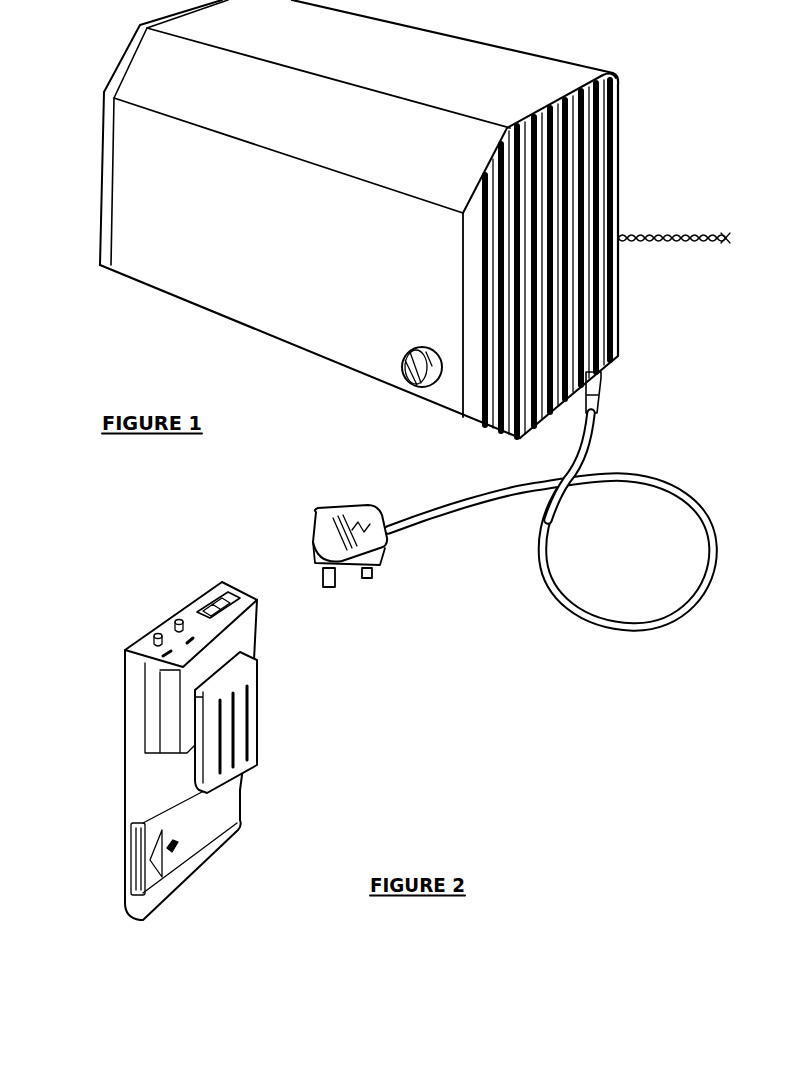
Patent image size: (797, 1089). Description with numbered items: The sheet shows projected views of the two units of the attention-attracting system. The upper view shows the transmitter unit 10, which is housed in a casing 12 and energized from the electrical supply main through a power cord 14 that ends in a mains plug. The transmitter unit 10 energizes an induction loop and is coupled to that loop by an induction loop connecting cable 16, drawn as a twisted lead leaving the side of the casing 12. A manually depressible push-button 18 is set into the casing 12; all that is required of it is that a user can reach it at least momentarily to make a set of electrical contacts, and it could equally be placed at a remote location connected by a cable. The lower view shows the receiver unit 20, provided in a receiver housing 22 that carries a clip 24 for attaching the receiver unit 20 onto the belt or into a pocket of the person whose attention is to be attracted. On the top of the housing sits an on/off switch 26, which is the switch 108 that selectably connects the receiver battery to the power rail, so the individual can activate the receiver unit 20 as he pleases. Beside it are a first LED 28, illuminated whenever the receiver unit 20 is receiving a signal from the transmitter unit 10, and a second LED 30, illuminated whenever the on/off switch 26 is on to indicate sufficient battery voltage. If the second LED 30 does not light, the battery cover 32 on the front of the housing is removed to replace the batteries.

In FIG. 1, the transmitter unit 10 is at (133, 362).
In FIG. 1, the casing 12 is at (505, 57).
In FIG. 1, the power cord 14 is at (587, 440).
In FIG. 1, the induction loop connecting cable 16 is at (668, 233).
In FIG. 1, the push-button 18 is at (407, 378).
In FIG. 2, the receiver unit 20 is at (128, 964).
In FIG. 2, the receiver housing 22 is at (243, 605).
In FIG. 2, the clip 24 is at (248, 735).
In FIG. 2, the on/off switch 26 is at (200, 598).
In FIG. 2, the switch 108 is at (180, 570).
In FIG. 2, the first LED 28 is at (172, 622).
In FIG. 2, the second LED 30 is at (152, 638).
In FIG. 2, the battery cover 32 is at (178, 855).